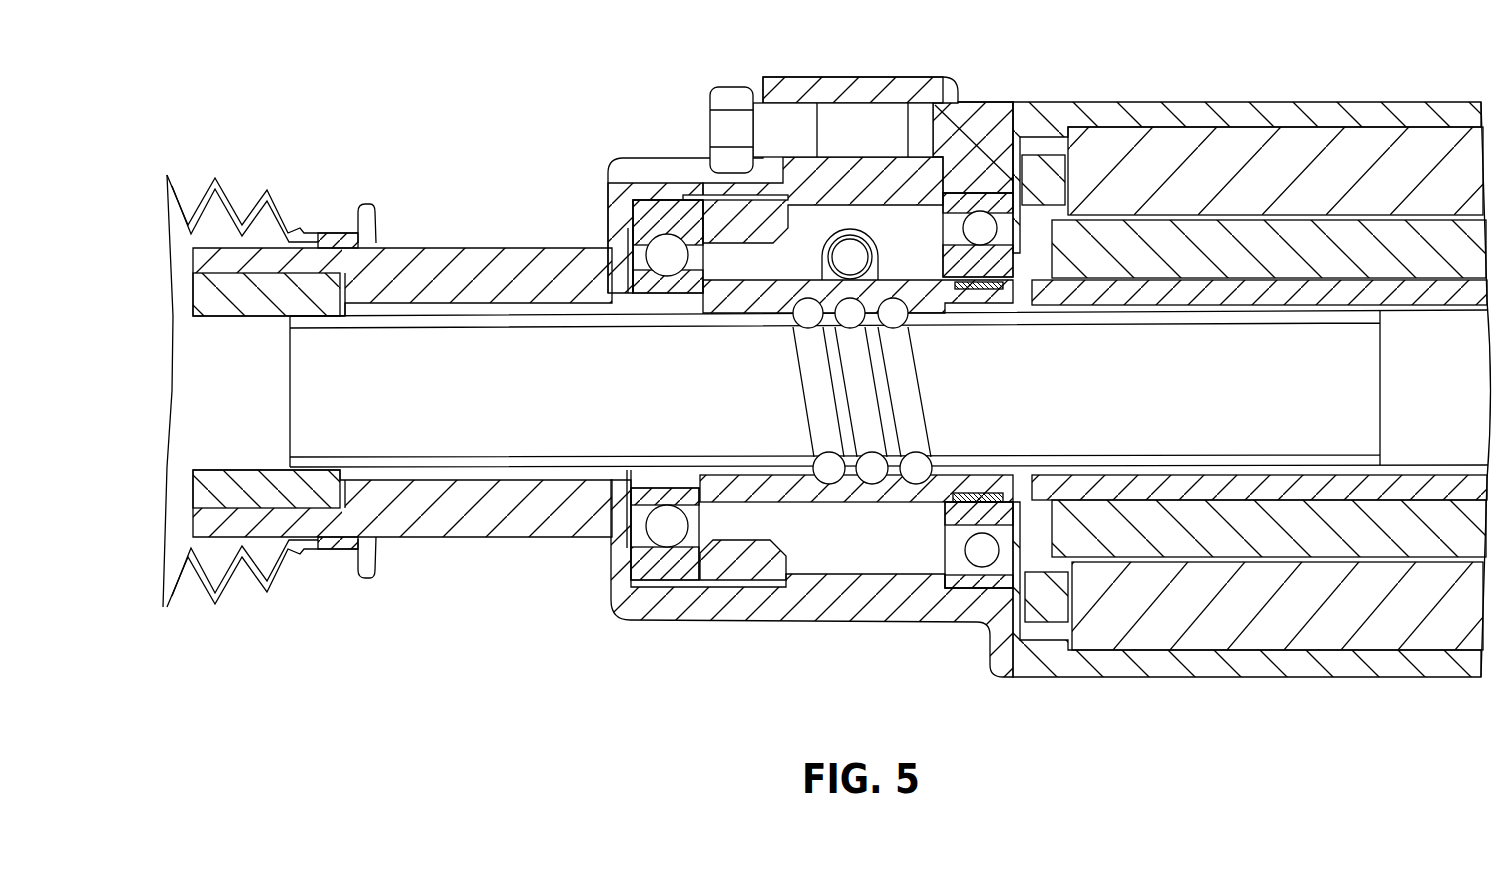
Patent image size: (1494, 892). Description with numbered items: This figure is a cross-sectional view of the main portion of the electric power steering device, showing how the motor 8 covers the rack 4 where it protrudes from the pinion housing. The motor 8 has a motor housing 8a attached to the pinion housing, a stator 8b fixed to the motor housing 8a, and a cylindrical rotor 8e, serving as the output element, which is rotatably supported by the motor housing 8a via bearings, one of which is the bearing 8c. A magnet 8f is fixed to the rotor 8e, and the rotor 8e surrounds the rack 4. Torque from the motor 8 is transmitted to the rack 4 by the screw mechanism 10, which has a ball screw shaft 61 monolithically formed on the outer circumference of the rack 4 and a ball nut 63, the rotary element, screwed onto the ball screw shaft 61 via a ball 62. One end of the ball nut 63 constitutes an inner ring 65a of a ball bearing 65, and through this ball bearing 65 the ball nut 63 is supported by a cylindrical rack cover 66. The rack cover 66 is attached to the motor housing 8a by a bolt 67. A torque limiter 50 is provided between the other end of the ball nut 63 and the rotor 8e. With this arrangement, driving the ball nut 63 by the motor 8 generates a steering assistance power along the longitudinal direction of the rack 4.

The rack 4 is at (445, 432).
The motor 8 is at (1252, 345).
The motor housing 8a is at (1196, 104).
The stator 8b is at (1330, 168).
The bearing 8c is at (983, 225).
The rotor 8e is at (1385, 290).
The magnet 8f is at (1145, 250).
The screw mechanism 10 is at (889, 490).
The torque limiter 50 is at (990, 504).
The ball screw shaft 61 is at (806, 425).
The ball 62 is at (833, 480).
The ball nut 63 is at (929, 492).
The ball bearing 65 is at (665, 528).
The inner ring 65a is at (645, 503).
The rack cover 66 is at (715, 605).
The bolt 67 is at (857, 127).